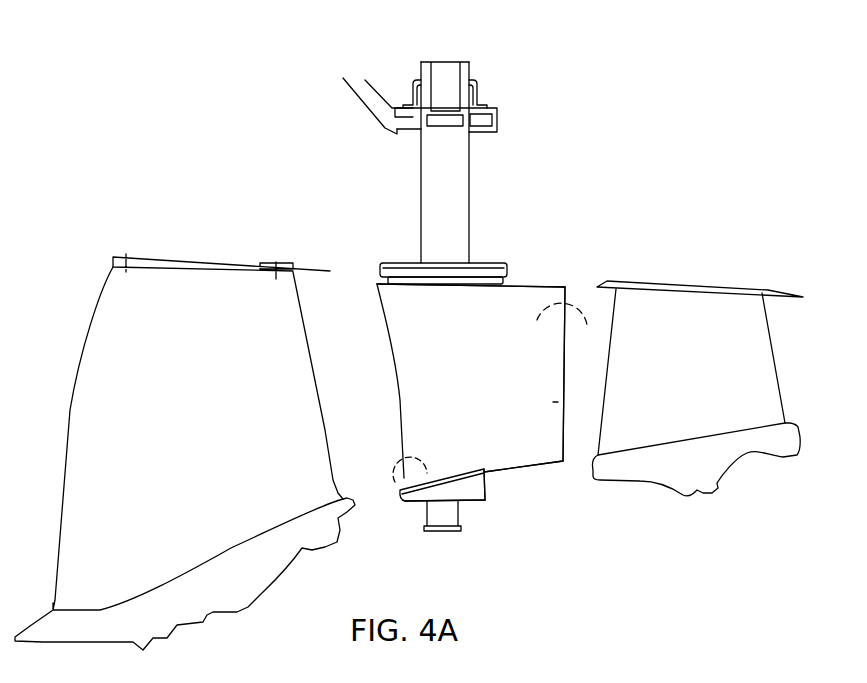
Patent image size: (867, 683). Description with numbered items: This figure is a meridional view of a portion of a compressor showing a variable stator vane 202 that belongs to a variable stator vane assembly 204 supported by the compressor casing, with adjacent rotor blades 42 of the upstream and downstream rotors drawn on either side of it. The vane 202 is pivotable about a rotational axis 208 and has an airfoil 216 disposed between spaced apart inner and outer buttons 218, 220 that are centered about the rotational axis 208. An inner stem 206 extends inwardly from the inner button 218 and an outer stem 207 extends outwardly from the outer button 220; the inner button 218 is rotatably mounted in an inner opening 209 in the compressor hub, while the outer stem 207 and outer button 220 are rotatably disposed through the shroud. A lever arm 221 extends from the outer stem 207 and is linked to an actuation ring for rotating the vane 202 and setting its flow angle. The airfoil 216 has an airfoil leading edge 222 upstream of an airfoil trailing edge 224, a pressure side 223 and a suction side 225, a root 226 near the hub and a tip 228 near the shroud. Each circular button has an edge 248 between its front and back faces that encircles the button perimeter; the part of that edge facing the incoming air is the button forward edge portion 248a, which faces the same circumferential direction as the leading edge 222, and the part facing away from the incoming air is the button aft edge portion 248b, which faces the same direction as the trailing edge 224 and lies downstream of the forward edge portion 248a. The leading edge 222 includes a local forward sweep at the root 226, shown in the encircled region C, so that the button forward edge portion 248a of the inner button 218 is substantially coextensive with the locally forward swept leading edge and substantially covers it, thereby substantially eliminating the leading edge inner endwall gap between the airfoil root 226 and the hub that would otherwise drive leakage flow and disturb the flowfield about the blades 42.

The rotor blades 42 is at (80, 388).
The variable stator vane 202 is at (482, 414).
The variable stator vane assembly 204 is at (458, 151).
The inner stem 206 is at (440, 532).
The outer stem 207 is at (470, 175).
The rotational axis 208 is at (443, 57).
The inner opening 209 is at (409, 479).
The airfoil 216 is at (553, 402).
The inner button 218 is at (487, 491).
The outer button 220 is at (510, 268).
The lever arm 221 is at (357, 100).
The airfoil leading edge 222 is at (396, 367).
The pressure side 223 is at (492, 383).
The airfoil trailing edge 224 is at (565, 376).
The suction side 225 is at (573, 329).
The root 226 is at (548, 468).
The tip 228 is at (378, 282).
The edge 248 is at (376, 281).
The button forward edge portion 248a is at (403, 500).
The button aft edge portion 248b is at (489, 478).
The encircled region C is at (397, 491).